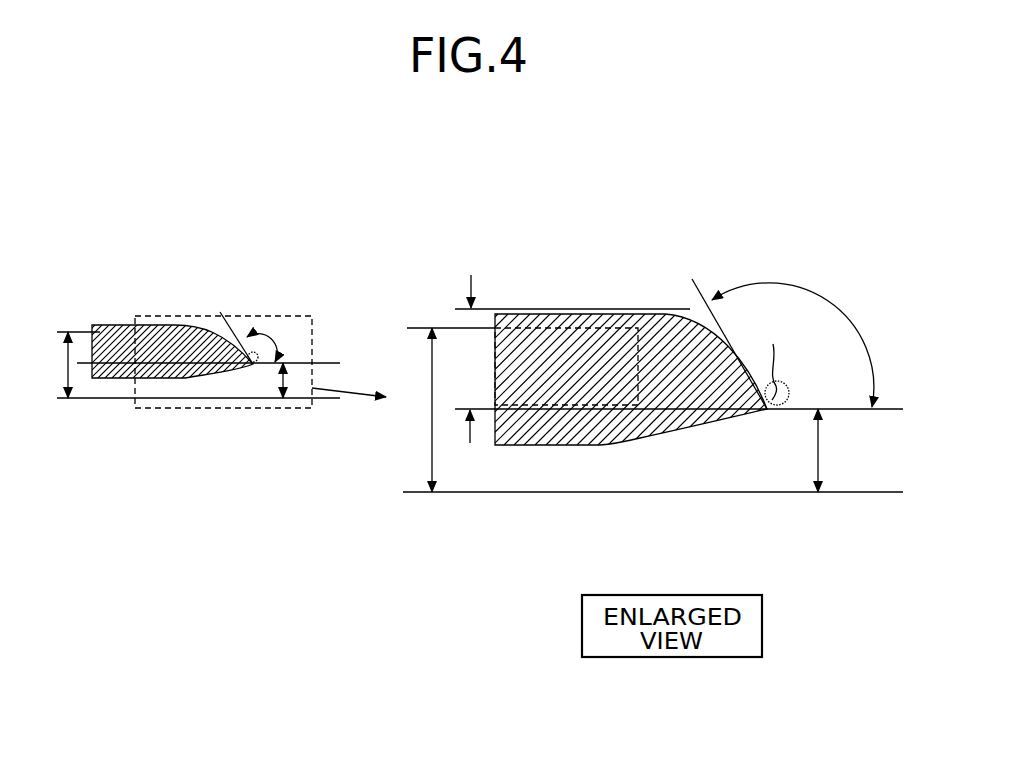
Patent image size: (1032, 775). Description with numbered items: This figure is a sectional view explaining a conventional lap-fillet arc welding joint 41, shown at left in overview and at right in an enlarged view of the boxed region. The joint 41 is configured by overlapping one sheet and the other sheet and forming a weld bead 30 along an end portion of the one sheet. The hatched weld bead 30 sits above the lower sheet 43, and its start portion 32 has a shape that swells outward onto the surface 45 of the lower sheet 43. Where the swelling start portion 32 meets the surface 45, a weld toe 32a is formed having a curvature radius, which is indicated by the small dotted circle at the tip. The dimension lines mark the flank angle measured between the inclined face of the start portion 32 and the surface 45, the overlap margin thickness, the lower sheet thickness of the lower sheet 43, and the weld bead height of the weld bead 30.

The conventional lap-fillet arc welding joint 41 is at (120, 226).
The weld bead 30 is at (123, 313).
The start portion 32 is at (240, 342).
The weld toe 32a is at (253, 366).
The lower sheet 43 is at (330, 382).
The surface 45 is at (843, 407).